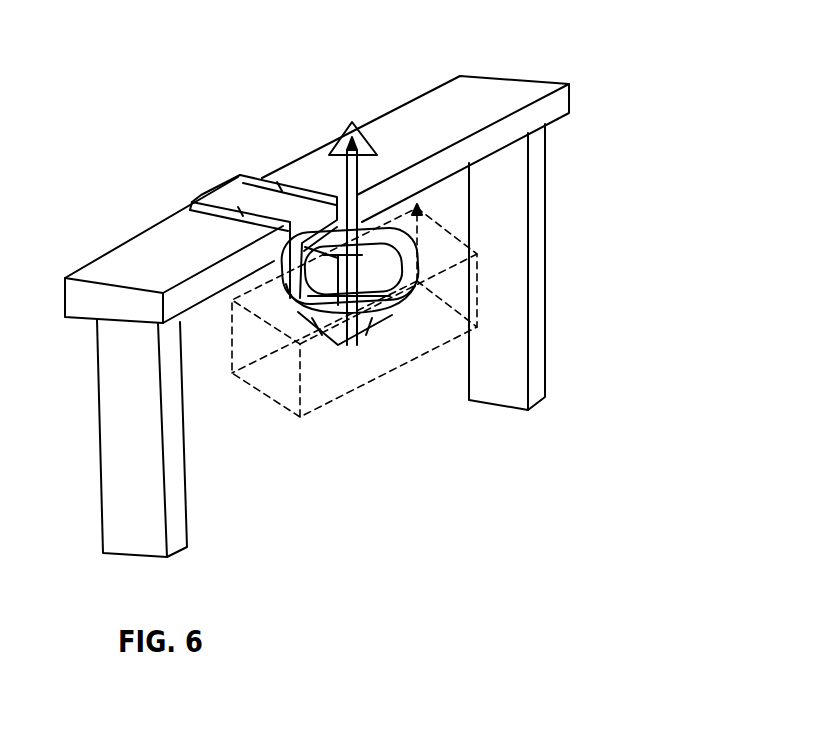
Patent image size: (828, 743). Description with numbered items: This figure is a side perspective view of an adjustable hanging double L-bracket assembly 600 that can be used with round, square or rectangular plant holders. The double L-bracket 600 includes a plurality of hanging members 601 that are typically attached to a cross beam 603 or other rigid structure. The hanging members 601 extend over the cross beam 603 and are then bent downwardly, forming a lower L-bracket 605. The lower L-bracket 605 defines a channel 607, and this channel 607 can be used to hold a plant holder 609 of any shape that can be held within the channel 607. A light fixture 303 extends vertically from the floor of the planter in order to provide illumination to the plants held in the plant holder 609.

The light fixture 303 is at (338, 127).
The adjustable hanging double L-bracket assembly 600 is at (580, 556).
The hanging member 601 is at (236, 174).
The cross beam 603 is at (463, 105).
The lower L-bracket 605 is at (307, 333).
The channel 607 is at (405, 268).
The plant holder 609 is at (322, 398).